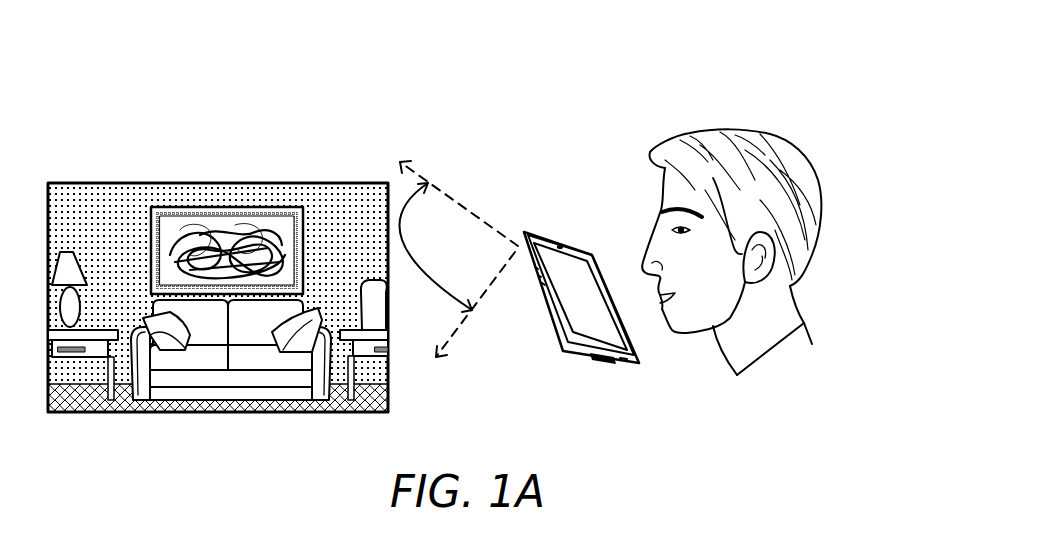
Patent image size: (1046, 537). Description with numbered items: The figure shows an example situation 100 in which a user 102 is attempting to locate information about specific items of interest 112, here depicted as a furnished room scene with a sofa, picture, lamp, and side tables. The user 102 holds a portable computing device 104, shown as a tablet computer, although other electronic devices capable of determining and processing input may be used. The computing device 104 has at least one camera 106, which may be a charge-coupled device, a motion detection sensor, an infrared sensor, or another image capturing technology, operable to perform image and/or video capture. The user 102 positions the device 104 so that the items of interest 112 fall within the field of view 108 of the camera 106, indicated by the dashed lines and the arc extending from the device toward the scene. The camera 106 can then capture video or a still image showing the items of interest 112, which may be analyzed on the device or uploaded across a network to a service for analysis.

The example situation 100 is at (684, 86).
The user 102 is at (647, 182).
The portable computing device 104 is at (570, 366).
The camera 106 is at (522, 238).
The field of view 108 is at (458, 259).
The items of interest 112 is at (104, 170).